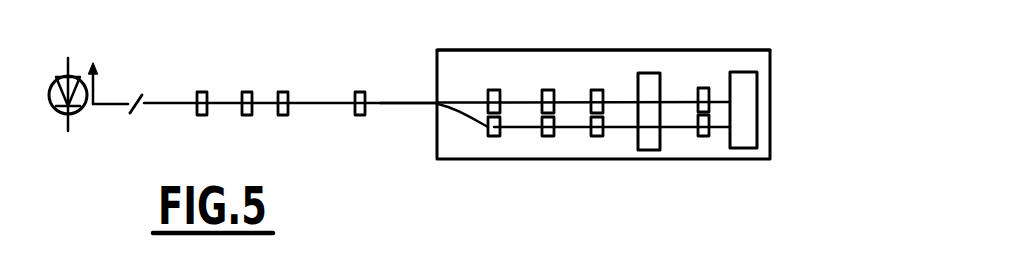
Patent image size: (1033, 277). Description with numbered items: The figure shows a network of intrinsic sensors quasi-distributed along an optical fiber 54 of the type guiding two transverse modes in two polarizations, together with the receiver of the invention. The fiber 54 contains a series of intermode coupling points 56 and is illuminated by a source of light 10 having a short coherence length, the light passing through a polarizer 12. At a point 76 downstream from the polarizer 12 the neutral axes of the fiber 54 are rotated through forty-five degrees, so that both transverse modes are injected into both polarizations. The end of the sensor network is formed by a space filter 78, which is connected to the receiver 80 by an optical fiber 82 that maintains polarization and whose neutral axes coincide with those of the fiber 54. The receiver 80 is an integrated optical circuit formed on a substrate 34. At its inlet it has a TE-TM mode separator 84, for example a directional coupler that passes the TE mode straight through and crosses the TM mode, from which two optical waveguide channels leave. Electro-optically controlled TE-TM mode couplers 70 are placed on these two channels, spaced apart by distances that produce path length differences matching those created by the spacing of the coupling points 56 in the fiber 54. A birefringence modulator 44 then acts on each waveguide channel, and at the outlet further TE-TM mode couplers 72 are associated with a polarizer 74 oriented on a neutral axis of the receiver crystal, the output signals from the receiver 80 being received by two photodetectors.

The source of light 10 is at (54, 81).
The polarizer 12 is at (94, 90).
The substrate 34 is at (472, 60).
The birefringence modulator 44 is at (650, 73).
The optical fiber 54 is at (163, 102).
The intermode coupling points 56 is at (248, 92).
The TE-TM mode couplers 70 is at (596, 90).
The TE-TM mode couplers 72 is at (705, 87).
The polarizer 74 is at (743, 72).
The point 76 is at (130, 113).
The space filter 78 is at (362, 91).
The receiver 80 is at (582, 47).
The optical fiber 82 is at (398, 101).
The TE-TM mode separator 84 is at (442, 112).